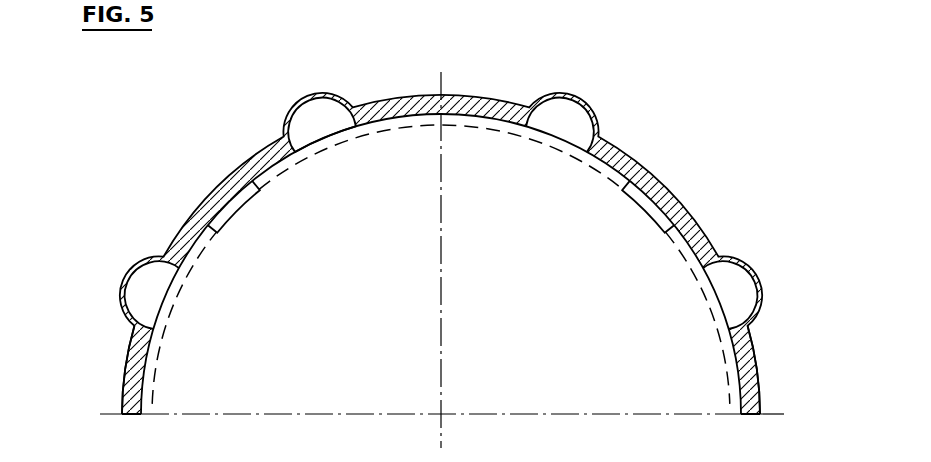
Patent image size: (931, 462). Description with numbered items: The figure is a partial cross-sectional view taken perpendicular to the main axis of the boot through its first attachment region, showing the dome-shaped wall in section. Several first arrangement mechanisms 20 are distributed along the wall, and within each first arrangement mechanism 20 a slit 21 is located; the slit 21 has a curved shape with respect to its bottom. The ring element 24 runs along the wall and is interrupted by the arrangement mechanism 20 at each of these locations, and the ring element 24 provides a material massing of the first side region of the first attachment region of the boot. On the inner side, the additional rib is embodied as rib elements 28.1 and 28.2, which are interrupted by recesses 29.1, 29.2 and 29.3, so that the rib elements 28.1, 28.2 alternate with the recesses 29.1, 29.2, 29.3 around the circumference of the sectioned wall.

The first arrangement mechanism 20 is at (315, 97).
The slit 21 is at (310, 125).
The ring element 24 is at (415, 92).
The rib element 28.1 is at (232, 202).
The rib element 28.2 is at (657, 207).
The recess 29.1 is at (145, 385).
The recess 29.2 is at (475, 122).
The recess 29.3 is at (733, 377).